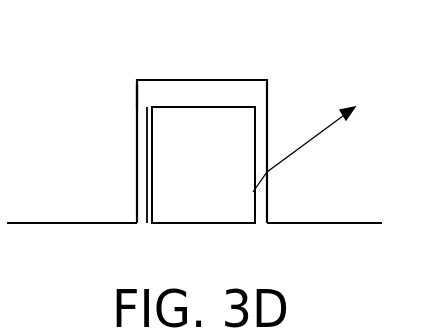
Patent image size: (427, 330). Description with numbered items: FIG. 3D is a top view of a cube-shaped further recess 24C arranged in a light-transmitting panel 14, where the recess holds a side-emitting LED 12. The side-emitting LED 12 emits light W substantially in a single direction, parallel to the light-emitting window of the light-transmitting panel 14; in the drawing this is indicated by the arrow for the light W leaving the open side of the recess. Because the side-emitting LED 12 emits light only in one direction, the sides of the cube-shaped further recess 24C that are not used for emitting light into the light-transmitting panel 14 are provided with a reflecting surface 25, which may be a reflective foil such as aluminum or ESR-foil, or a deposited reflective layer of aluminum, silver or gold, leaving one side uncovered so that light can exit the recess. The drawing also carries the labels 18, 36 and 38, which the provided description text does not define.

The side-emitting LED 12 is at (205, 118).
The light-transmitting panel 14 is at (35, 210).
The gap / spacing 18 is at (342, 222).
The further recess 24C is at (246, 90).
The reflecting surface 25 is at (146, 172).
The air flow path 36 is at (166, 84).
The shield outer wall 38 is at (137, 98).
The light w is at (322, 128).